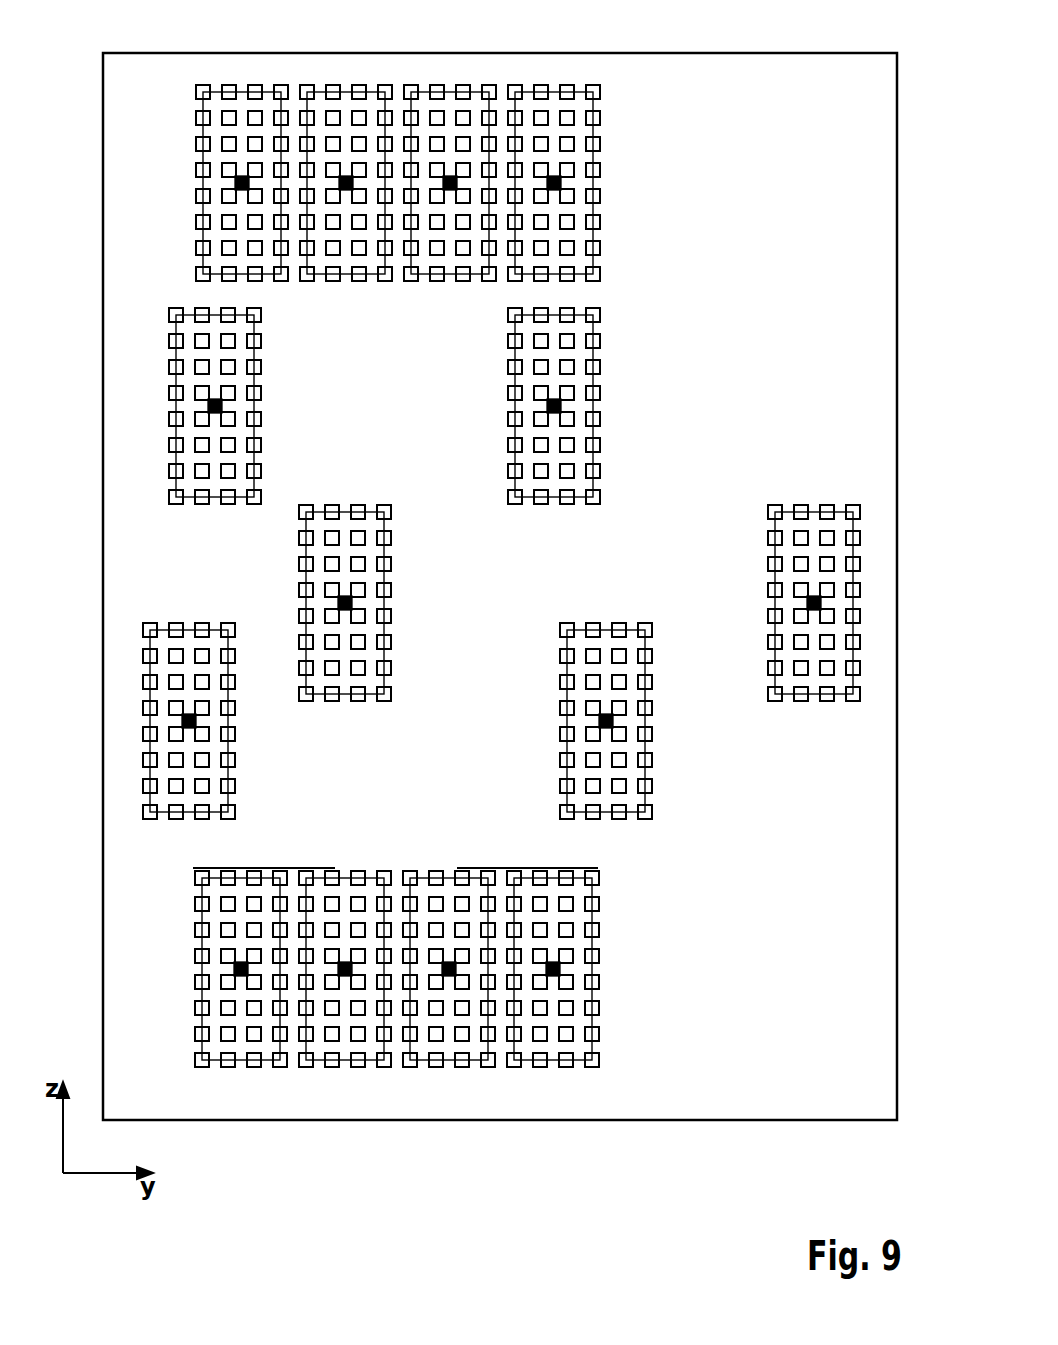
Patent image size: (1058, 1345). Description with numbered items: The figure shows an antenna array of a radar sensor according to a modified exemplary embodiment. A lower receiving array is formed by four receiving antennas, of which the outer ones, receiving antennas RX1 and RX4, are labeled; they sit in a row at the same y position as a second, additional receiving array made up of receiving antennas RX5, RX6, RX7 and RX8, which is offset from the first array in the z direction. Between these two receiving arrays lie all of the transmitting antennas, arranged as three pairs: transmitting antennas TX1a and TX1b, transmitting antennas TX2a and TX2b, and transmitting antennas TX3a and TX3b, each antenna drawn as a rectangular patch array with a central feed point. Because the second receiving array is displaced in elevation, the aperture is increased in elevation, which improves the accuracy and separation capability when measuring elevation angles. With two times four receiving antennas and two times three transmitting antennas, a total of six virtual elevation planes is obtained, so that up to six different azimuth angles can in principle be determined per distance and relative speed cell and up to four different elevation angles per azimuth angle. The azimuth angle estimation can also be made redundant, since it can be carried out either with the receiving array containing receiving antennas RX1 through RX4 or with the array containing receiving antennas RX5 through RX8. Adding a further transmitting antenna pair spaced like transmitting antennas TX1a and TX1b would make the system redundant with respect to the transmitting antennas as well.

The receiving antenna RX1 is at (196, 948).
The receiving antenna RX4 is at (594, 946).
The receiving antenna RX5 is at (243, 90).
The receiving antenna RX6 is at (347, 90).
The receiving antenna RX7 is at (450, 90).
The receiving antenna RX8 is at (555, 90).
The transmitting antenna TX1a is at (227, 773).
The transmitting antenna TX1b is at (647, 773).
The transmitting antenna TX2a is at (388, 628).
The transmitting antenna TX2b is at (773, 553).
The transmitting antenna TX3a is at (216, 498).
The transmitting antenna TX3b is at (514, 380).